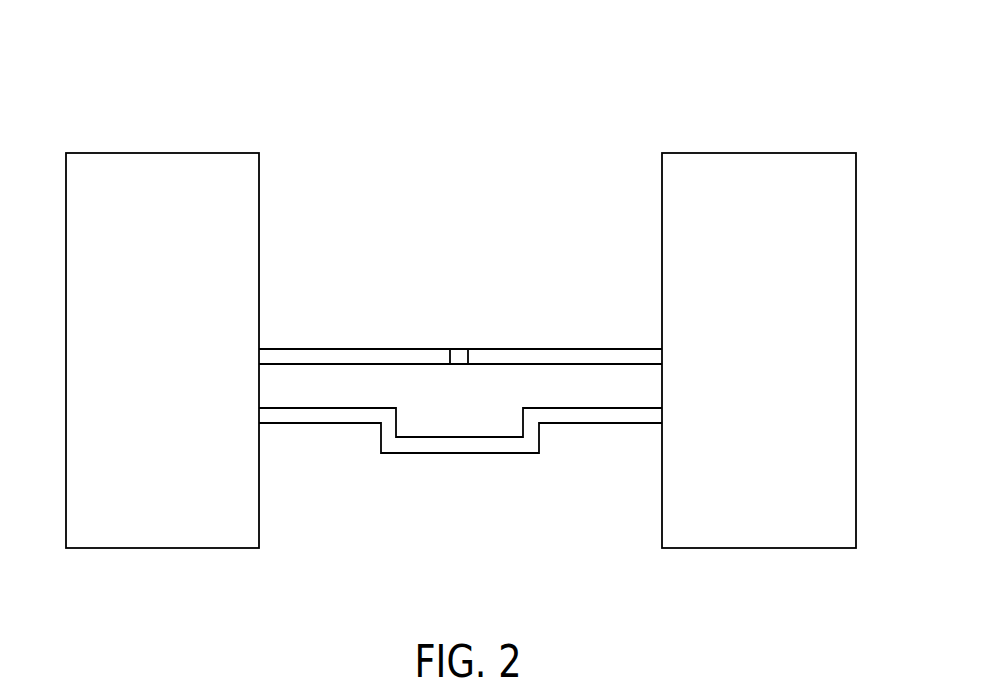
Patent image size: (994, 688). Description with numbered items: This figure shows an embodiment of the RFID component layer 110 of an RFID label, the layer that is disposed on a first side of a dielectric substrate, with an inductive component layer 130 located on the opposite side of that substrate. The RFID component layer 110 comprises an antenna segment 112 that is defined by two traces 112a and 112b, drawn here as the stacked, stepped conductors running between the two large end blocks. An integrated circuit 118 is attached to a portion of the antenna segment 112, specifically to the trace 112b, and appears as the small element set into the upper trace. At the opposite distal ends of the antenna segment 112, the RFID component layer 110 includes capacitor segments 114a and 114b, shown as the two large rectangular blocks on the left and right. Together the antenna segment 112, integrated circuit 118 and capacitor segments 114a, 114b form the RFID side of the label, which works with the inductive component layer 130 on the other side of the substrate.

The RFID component layer 110 is at (786, 125).
The antenna segment 112 is at (259, 127).
The trace 112a is at (445, 453).
The trace 112b is at (328, 349).
The capacitor segment 114a is at (93, 549).
The capacitor segment 114b is at (716, 549).
The integrated circuit 118 is at (459, 358).
The inductive component layer 130 is at (829, 676).